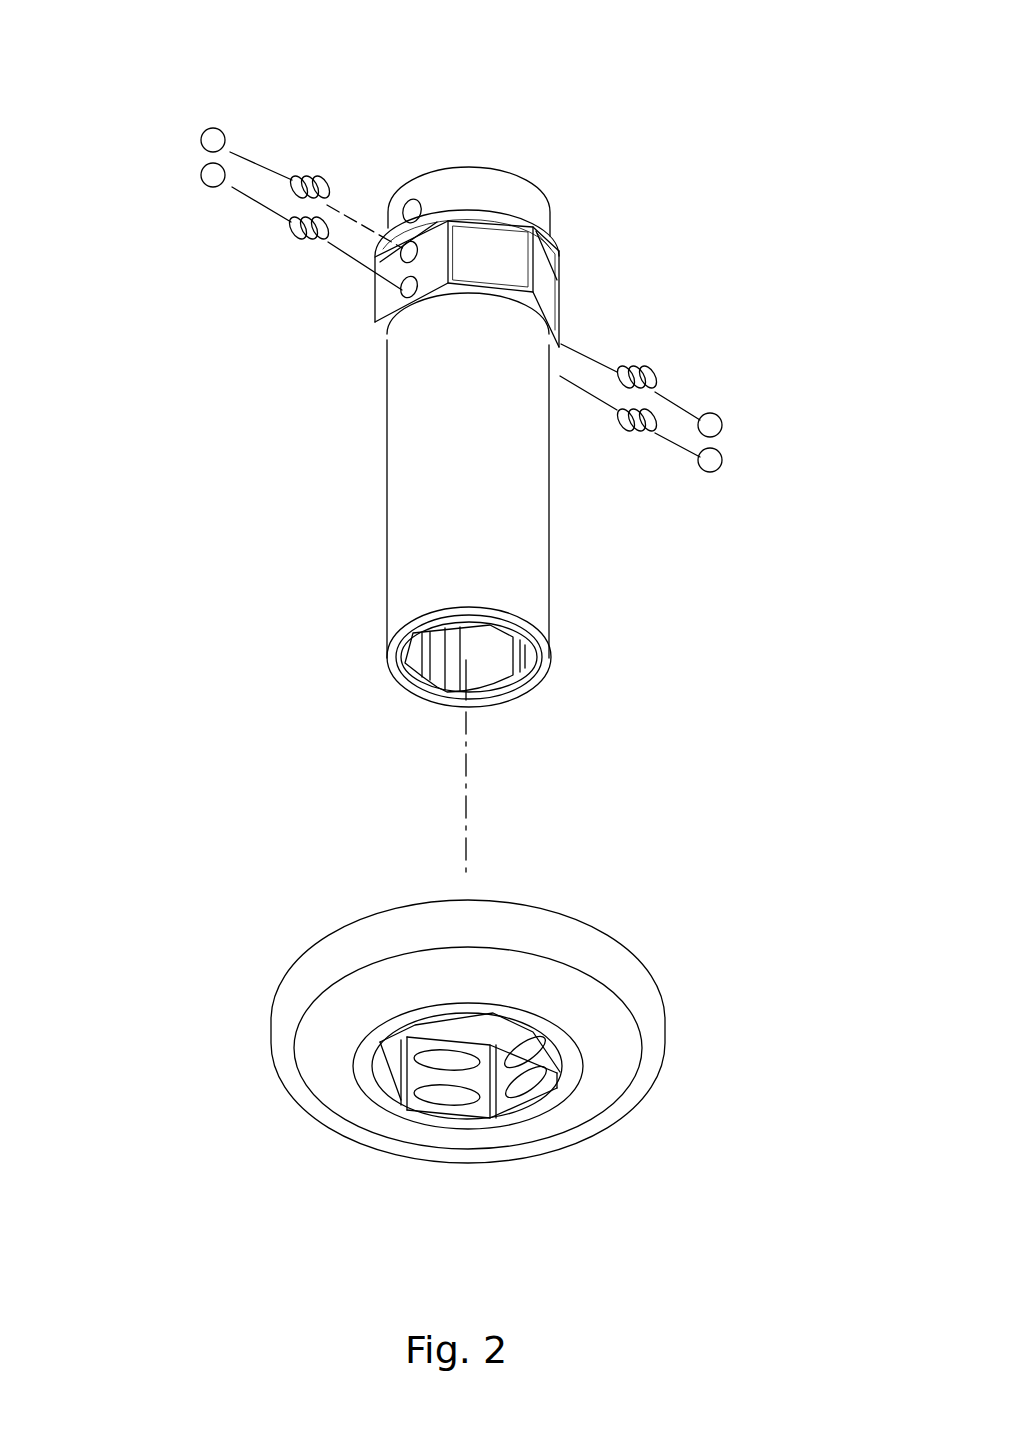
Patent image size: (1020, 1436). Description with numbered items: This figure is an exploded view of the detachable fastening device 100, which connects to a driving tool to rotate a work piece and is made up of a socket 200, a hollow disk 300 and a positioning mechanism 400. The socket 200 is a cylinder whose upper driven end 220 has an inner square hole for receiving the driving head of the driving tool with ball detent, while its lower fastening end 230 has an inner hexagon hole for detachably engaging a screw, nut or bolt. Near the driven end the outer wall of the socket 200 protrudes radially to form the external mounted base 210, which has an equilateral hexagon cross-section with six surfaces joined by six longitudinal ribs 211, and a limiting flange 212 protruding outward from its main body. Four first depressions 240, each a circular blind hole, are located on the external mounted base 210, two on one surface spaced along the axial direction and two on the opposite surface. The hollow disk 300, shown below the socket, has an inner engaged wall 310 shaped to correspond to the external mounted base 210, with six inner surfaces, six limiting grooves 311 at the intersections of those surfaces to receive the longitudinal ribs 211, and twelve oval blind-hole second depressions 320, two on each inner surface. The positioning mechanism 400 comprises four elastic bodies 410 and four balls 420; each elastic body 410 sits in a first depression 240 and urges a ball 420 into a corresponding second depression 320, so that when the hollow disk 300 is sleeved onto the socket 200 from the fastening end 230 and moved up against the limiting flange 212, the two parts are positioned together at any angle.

The detachable fastening device 100 is at (120, 188).
The socket 200 is at (535, 497).
The external mounted base 210 is at (548, 304).
The longitudinal ribs 211 is at (533, 268).
The limiting flange 212 is at (505, 226).
The driven end 220 is at (482, 176).
The fastening end 230 is at (537, 653).
The first depression 240 is at (407, 289).
The hollow disk 300 is at (640, 990).
The inner engaged wall 310 is at (468, 1112).
The limiting grooves 311 is at (492, 1112).
The second depression 320 is at (530, 1082).
The positioning mechanism 400 is at (364, 69).
The elastic body 410 is at (312, 177).
The ball 420 is at (216, 134).